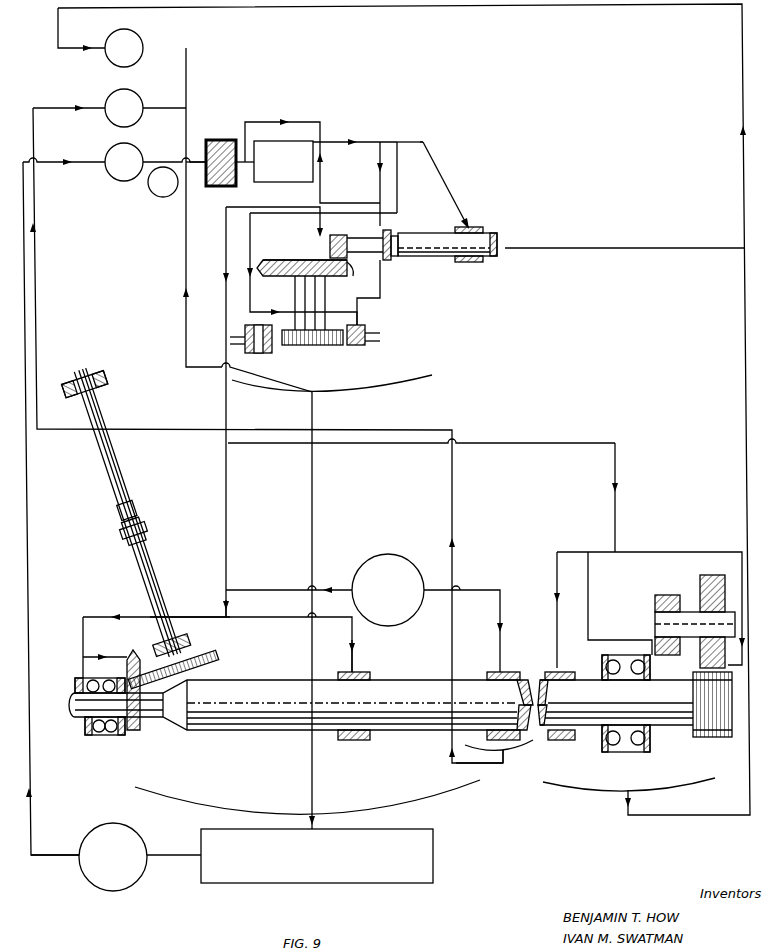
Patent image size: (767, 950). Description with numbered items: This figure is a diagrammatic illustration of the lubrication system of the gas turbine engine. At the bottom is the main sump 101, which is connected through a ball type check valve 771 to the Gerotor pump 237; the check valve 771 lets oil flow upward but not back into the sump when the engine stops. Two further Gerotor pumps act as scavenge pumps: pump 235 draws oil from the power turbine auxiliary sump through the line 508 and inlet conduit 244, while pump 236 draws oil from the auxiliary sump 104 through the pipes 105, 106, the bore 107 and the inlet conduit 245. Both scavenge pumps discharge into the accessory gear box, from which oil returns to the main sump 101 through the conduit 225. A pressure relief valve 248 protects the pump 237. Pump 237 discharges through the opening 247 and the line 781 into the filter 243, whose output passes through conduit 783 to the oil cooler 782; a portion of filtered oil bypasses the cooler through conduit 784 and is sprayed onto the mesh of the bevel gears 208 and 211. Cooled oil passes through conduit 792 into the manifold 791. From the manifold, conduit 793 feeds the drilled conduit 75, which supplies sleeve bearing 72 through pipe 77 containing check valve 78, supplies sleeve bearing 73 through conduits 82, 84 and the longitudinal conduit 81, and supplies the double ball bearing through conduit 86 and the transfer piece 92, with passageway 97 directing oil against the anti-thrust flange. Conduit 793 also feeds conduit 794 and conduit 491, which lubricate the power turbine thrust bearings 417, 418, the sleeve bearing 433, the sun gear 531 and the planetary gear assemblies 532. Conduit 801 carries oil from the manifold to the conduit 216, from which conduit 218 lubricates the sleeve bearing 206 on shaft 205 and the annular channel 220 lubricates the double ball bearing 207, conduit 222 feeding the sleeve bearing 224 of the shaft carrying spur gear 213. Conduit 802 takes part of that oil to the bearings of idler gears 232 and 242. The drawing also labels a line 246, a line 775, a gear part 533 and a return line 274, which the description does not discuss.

The inlet conduit 244 is at (82, 46).
The Gerotor pump 235 is at (133, 37).
The inlet conduit 245 is at (60, 105).
The Gerotor pump 236 is at (136, 104).
The supply line to pump 246 is at (52, 162).
The Gerotor pump 237 is at (116, 152).
The opening 247 is at (148, 161).
The pressure relief valve 248 is at (160, 197).
The line 781 is at (188, 162).
The filter 243 is at (220, 140).
The conduit 783 is at (244, 182).
The conduit 784 is at (284, 122).
The oil cooler 782 is at (305, 150).
The conduit 792 is at (328, 144).
The conduit 793 is at (378, 151).
The conduit 801 is at (395, 142).
The manifold 791 is at (402, 142).
The conduit 216 is at (423, 142).
The conduit 218 is at (442, 176).
The sleeve bearing 206 is at (483, 231).
The shaft 205 is at (421, 252).
The annular channel 220 is at (386, 223).
The double ball bearing 207 is at (388, 238).
The bevel gear 208 is at (336, 240).
The bevel gear 211 is at (279, 277).
The spur gear 213 is at (310, 362).
The conduit 802 is at (250, 303).
The conduit 222 is at (380, 301).
The idler gear 242 is at (272, 350).
The sleeve bearing 224 is at (332, 353).
The idler gear 232 is at (367, 343).
The conduit 225 is at (315, 401).
The conduit 794 is at (548, 443).
The conduit 491 is at (618, 467).
The conduit 75 is at (234, 587).
The pipe 77 is at (327, 589).
The check valve 78 is at (416, 577).
The conduit 84 is at (282, 616).
The conduit 86 is at (208, 600).
The conduit 82 is at (242, 612).
The longitudinal conduit 81 is at (355, 653).
The sleeve bearing 73 is at (372, 670).
The sleeve bearing 72 is at (490, 669).
The sleeve bearing 433 is at (554, 669).
The bearing 775 is at (70, 728).
The transfer piece 92 is at (158, 646).
The passageway 97 is at (80, 655).
The anti-friction thrust bearing 417 is at (606, 757).
The anti-friction thrust bearing 418 is at (646, 755).
The sun gear 531 is at (717, 737).
The gear 533 is at (700, 581).
The planetary gear assemblies 532 is at (688, 599).
The auxiliary sump 104 is at (530, 749).
The pipe 105 is at (516, 761).
The pipe 106 is at (496, 762).
The bore 107 is at (452, 765).
The line 508 is at (728, 796).
The return line 274 is at (62, 853).
The check valve 771 is at (138, 846).
The main sump 101 is at (424, 842).